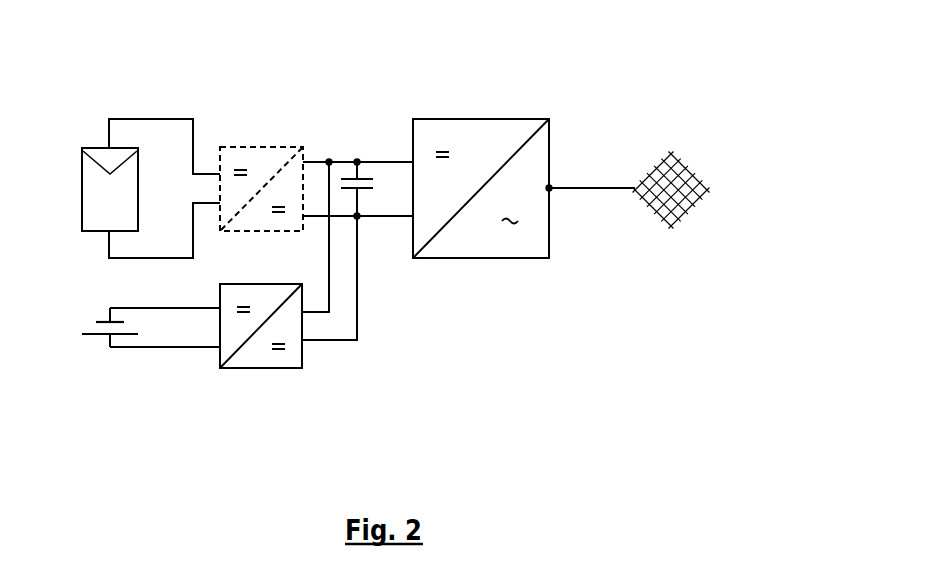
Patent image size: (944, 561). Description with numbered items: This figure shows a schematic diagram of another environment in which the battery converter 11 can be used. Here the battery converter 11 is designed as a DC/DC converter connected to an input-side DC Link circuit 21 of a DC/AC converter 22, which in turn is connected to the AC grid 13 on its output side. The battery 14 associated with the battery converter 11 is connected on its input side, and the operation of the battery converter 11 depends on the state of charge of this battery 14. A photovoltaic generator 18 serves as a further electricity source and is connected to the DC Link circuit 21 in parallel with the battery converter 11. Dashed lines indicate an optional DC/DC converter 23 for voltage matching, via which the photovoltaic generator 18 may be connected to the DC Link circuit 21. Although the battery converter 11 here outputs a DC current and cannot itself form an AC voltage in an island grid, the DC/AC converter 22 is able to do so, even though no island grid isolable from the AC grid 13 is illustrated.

The photovoltaic generator 18 is at (93, 145).
The DC/DC converter 23 is at (261, 144).
The DC Link circuit 21 is at (360, 158).
The DC/AC converter 22 is at (479, 117).
The AC grid 13 is at (692, 165).
The battery 14 is at (96, 347).
The battery converter 11 is at (253, 372).